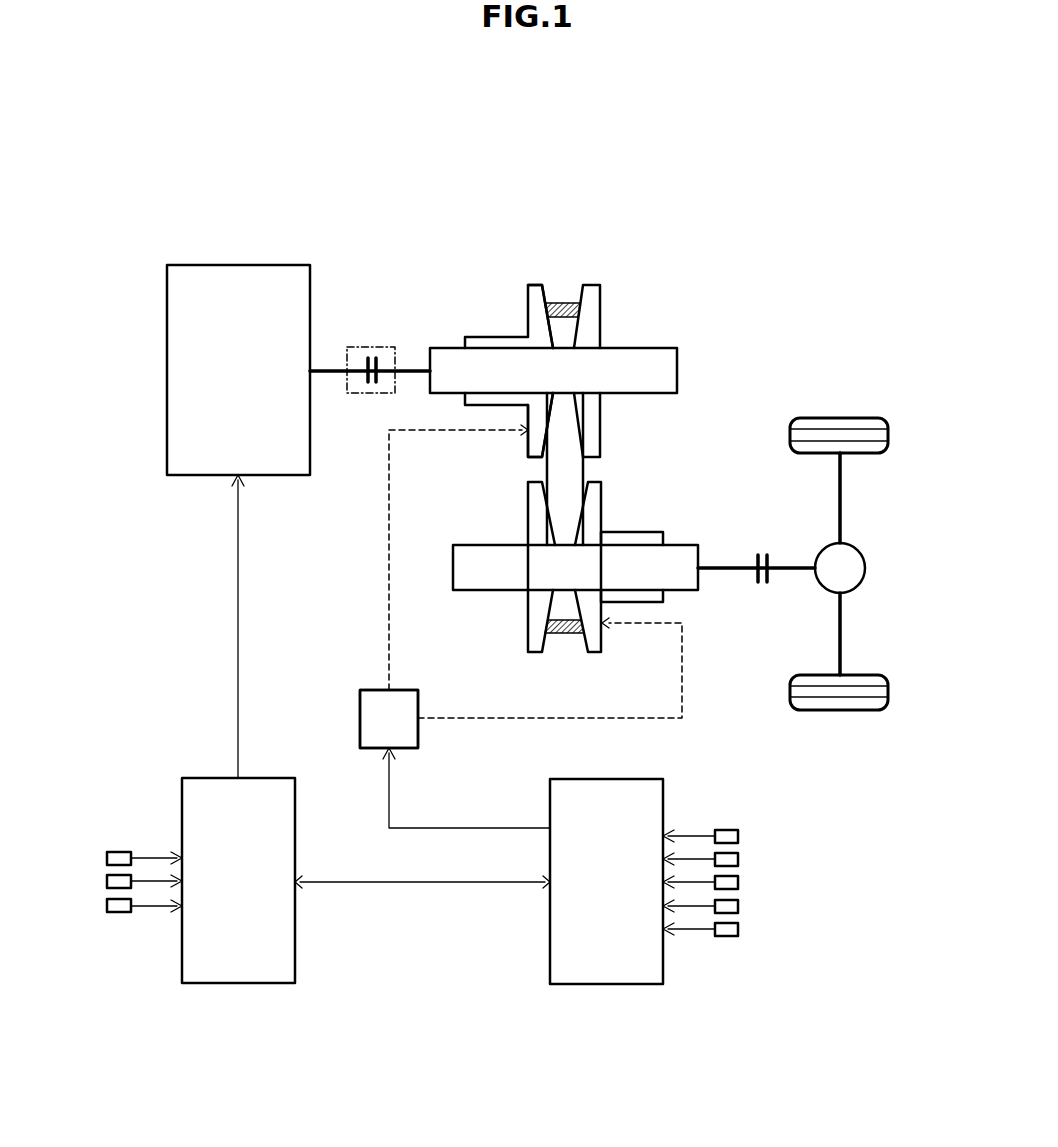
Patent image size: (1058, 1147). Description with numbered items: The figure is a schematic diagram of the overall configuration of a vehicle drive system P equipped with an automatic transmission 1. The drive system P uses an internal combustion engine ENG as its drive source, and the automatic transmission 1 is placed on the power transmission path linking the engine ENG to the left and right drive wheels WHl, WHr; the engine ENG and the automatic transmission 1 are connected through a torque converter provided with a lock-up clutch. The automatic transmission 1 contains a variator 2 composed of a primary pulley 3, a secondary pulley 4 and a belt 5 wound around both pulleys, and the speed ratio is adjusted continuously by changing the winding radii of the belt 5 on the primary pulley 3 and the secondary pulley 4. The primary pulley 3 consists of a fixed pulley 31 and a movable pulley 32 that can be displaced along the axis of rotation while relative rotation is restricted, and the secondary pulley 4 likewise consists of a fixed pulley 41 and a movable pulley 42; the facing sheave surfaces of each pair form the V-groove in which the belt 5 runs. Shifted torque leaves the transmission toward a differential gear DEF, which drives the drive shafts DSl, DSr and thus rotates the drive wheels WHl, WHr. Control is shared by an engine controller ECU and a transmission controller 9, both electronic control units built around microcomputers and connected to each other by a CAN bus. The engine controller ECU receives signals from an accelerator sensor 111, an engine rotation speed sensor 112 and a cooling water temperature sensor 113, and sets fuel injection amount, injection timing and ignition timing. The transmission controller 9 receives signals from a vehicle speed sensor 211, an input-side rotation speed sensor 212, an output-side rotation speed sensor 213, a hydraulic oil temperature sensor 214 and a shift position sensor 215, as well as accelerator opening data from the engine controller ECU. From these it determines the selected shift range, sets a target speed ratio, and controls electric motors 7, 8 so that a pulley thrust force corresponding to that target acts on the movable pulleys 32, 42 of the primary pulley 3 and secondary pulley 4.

The automatic transmission 1 is at (462, 238).
The drive system P is at (682, 216).
The variator 2 is at (698, 400).
The primary pulley 3 is at (553, 342).
The fixed pulley 31 is at (600, 283).
The movable pulley 32 is at (530, 283).
The secondary pulley 4 is at (575, 595).
The fixed pulley 41 is at (532, 653).
The movable pulley 42 is at (596, 653).
The belt 5 is at (573, 302).
The electric motor 7 is at (372, 690).
The electric motor 8 is at (389, 719).
The transmission controller 9 is at (648, 778).
The engine ENG is at (245, 263).
The engine controller ECU is at (278, 777).
The accelerator sensor 111 is at (107, 857).
The rotation speed sensor 112 is at (107, 880).
The cooling water temperature sensor 113 is at (107, 905).
The vehicle speed sensor 211 is at (738, 835).
The input-side rotation speed sensor 212 is at (738, 858).
The output-side rotation speed sensor 213 is at (738, 881).
The hydraulic oil temperature sensor 214 is at (738, 905).
The shift position sensor 215 is at (738, 928).
The differential gear DEF is at (866, 568).
The drive shaft DSl is at (842, 500).
The drive shaft DSr is at (842, 632).
The drive wheel WHl is at (888, 432).
The drive wheel WHr is at (888, 693).